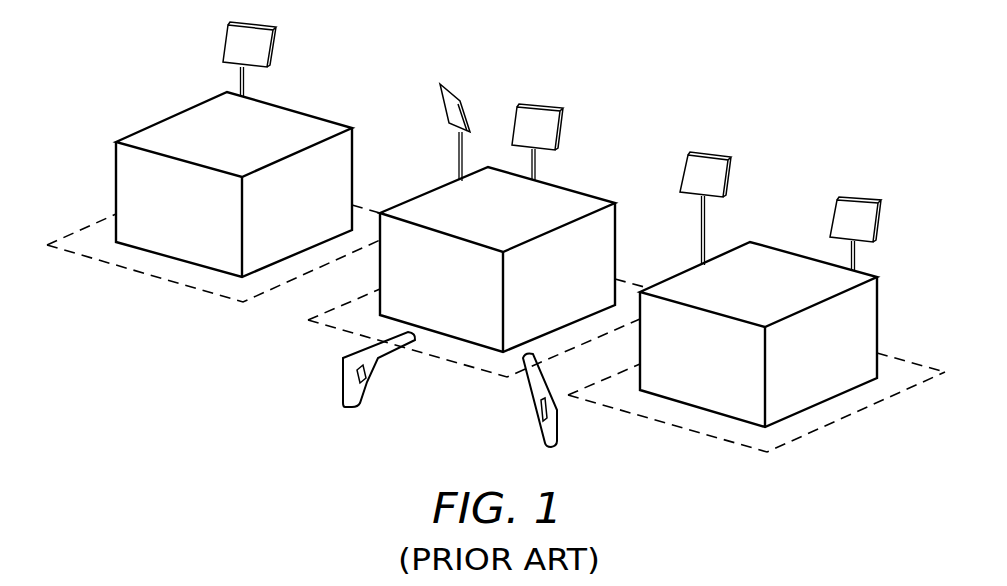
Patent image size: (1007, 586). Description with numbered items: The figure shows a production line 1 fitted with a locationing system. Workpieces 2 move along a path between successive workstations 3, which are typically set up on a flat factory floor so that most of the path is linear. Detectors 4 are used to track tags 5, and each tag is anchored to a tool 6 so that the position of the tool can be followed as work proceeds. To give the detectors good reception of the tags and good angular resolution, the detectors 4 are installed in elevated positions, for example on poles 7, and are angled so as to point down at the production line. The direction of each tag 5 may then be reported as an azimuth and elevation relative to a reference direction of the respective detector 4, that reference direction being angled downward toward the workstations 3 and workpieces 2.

The production line 1 is at (221, 350).
The workpiece 2 is at (356, 242).
The workstation 3 is at (127, 269).
The detector 4 is at (223, 45).
The tag 5 is at (369, 372).
The tool 6 is at (343, 388).
The pole 7 is at (246, 83).